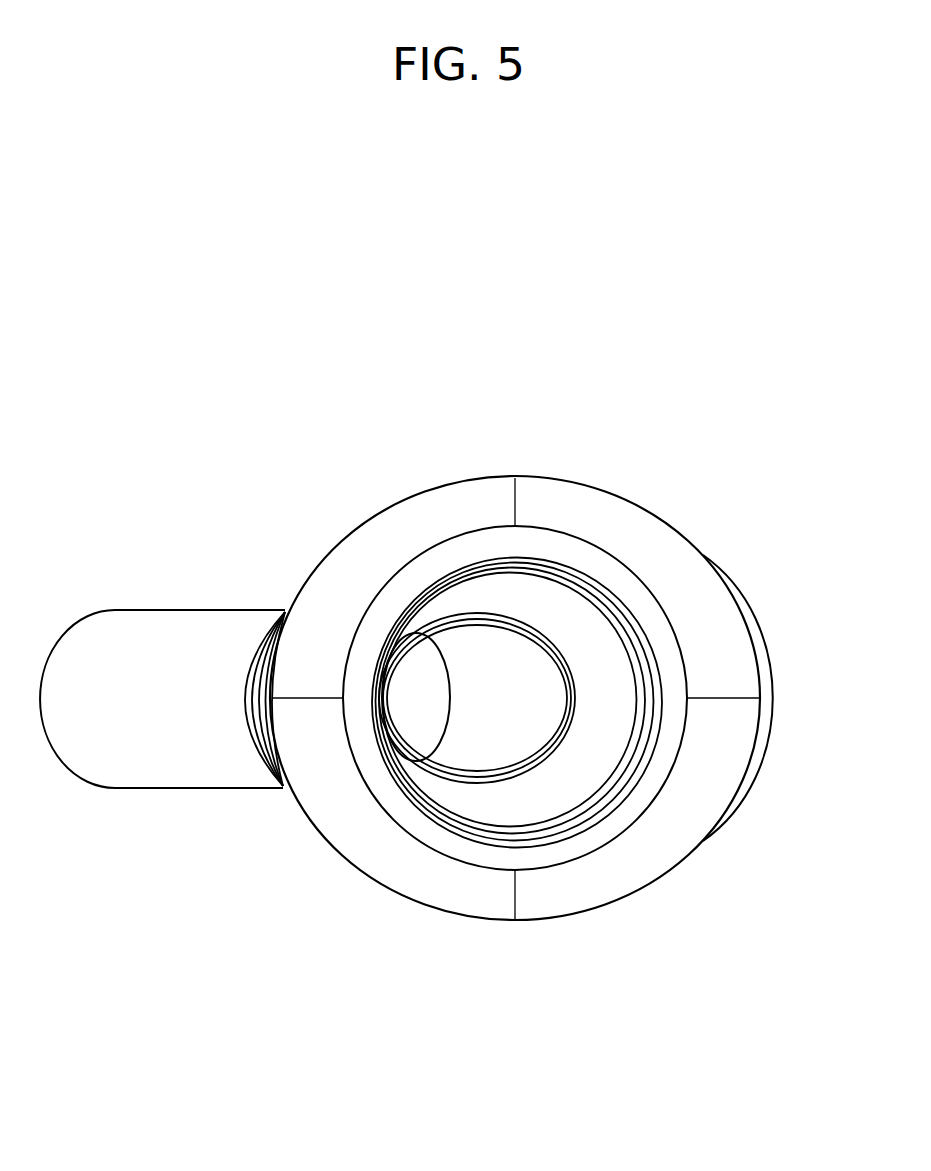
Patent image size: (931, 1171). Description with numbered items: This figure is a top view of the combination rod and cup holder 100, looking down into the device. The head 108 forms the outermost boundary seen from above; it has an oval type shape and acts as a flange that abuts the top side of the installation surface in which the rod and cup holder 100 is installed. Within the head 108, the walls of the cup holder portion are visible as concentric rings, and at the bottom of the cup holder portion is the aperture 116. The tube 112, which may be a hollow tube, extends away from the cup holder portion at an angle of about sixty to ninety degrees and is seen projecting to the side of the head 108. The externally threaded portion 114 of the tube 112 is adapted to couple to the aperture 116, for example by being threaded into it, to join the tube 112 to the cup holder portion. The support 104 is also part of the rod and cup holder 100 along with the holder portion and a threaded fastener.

The combination rod and cup holder 100 is at (180, 365).
The support 104 is at (768, 640).
The head 108 is at (650, 525).
The tube 112 is at (143, 623).
The externally threaded portion 114 is at (262, 755).
The aperture 116 is at (537, 727).